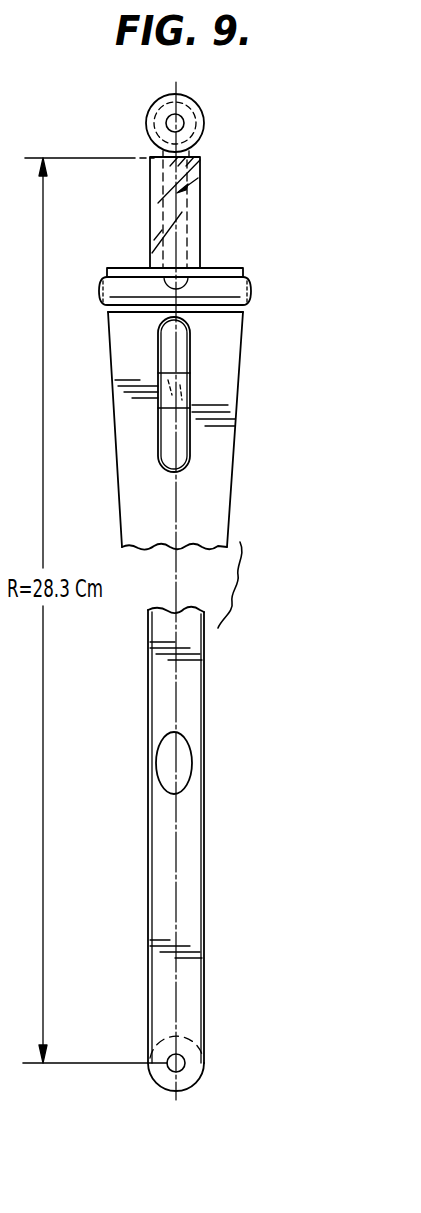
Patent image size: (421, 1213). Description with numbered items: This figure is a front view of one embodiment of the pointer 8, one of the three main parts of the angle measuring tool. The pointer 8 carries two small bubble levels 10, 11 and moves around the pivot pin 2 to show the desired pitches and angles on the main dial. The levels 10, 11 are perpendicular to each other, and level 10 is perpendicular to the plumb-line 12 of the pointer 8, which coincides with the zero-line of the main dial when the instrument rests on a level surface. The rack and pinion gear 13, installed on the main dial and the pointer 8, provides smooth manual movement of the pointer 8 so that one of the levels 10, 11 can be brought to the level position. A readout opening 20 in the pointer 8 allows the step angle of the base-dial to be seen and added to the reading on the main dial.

The pivot pin 2 is at (200, 1060).
The pointer 8 is at (238, 499).
The bubble level 10 is at (135, 292).
The bubble level 11 is at (170, 365).
The plumb-line 12 is at (204, 172).
The rack and pinion gear 13 is at (205, 123).
The readout opening 20 is at (182, 765).